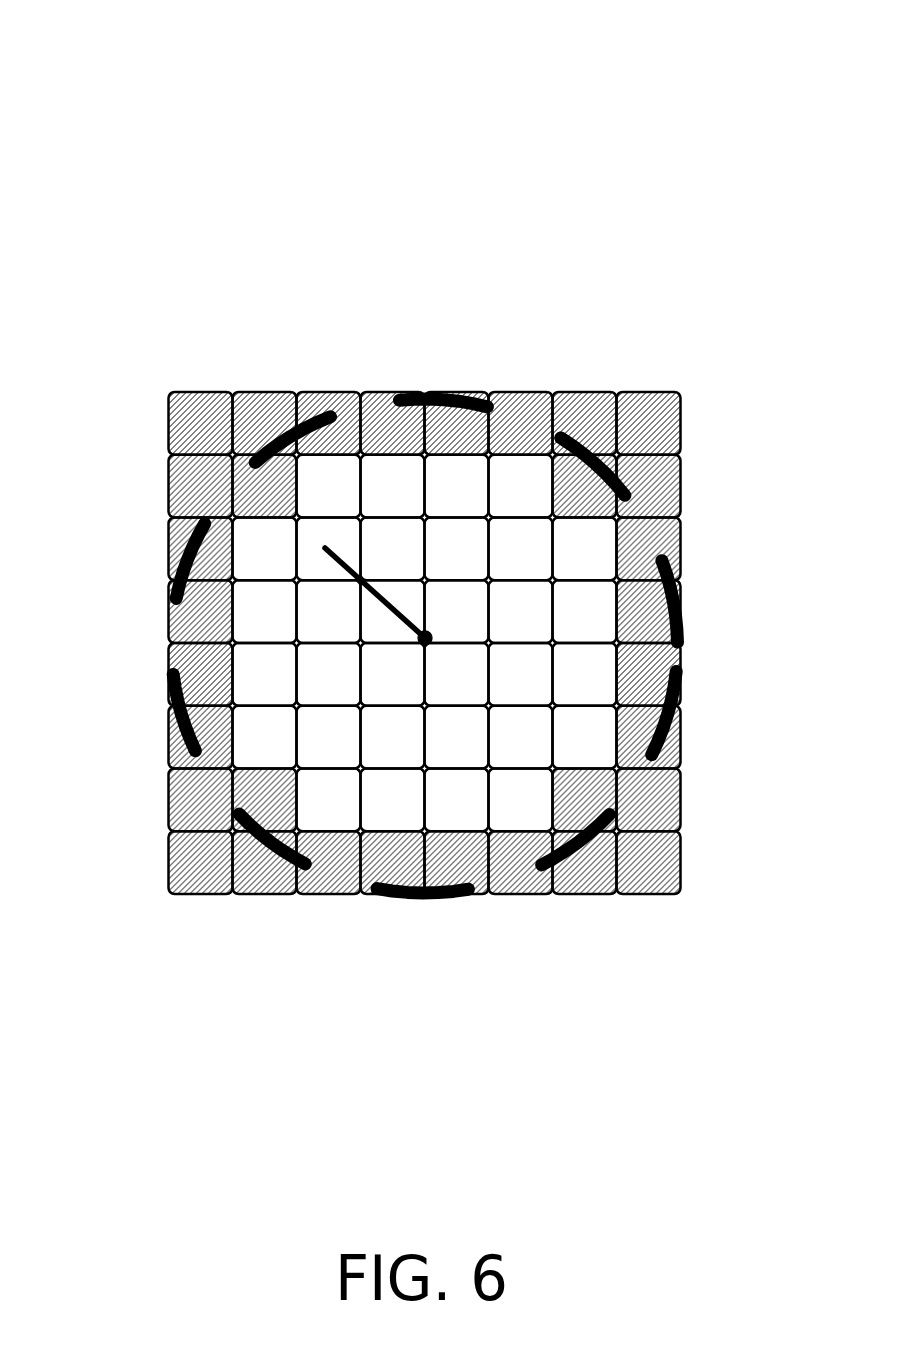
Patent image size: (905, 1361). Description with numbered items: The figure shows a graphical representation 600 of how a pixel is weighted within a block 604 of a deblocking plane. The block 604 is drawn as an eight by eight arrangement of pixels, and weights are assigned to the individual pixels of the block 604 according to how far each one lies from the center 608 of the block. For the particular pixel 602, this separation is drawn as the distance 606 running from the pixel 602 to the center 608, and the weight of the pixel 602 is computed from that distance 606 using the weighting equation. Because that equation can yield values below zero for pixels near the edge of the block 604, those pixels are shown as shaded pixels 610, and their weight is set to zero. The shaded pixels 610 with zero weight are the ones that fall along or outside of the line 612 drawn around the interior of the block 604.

The graphical representation 600 is at (115, 40).
The pixel 602 is at (315, 538).
The block 604 is at (627, 370).
The distance 606 is at (388, 563).
The center 608 is at (425, 638).
The shaded pixels 610 is at (200, 423).
The line 612 is at (440, 900).